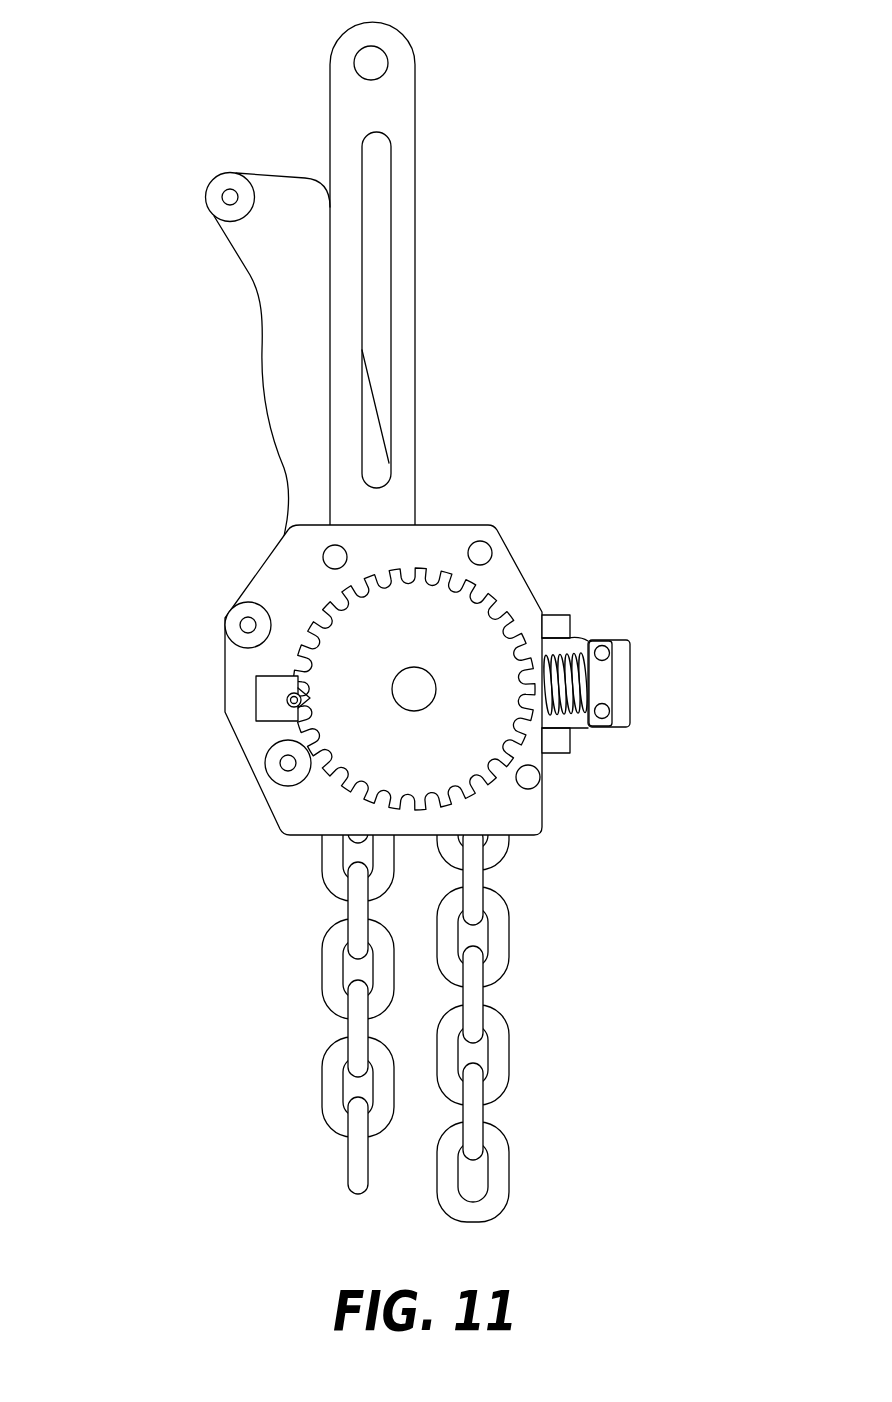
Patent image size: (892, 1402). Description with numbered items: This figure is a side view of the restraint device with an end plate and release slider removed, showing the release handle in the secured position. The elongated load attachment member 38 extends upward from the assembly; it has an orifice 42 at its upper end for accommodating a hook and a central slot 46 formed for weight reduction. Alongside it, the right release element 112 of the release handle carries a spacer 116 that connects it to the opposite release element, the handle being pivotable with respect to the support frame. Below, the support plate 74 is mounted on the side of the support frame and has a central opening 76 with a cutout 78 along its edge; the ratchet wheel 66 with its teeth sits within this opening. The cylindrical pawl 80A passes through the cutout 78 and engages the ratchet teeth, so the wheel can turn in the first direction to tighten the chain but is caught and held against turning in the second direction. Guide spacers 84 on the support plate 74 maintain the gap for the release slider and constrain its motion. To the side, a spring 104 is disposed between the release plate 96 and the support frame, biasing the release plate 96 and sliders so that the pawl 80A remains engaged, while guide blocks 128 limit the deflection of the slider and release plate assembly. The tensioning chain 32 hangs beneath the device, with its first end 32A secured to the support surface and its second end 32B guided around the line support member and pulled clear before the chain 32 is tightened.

The tensioning chain 32 is at (428, 984).
The first end of the tensioning chain 32A is at (348, 1175).
The second end of the tensioning chain 32B is at (508, 1172).
The load attachment member 38 is at (392, 107).
The orifice 42 is at (382, 52).
The central slot 46 is at (388, 276).
The ratchet wheel 66 is at (480, 627).
The support plate 74 is at (291, 559).
The central opening 76 is at (470, 790).
The cutout 78 is at (258, 695).
The cylindrical pawl 80A is at (297, 690).
The guide spacer 84 is at (226, 622).
The release plate 96 is at (602, 682).
The spring 104 is at (575, 655).
The right release element 112 is at (290, 190).
The spacer 116 is at (212, 198).
The guide block 128 is at (548, 612).